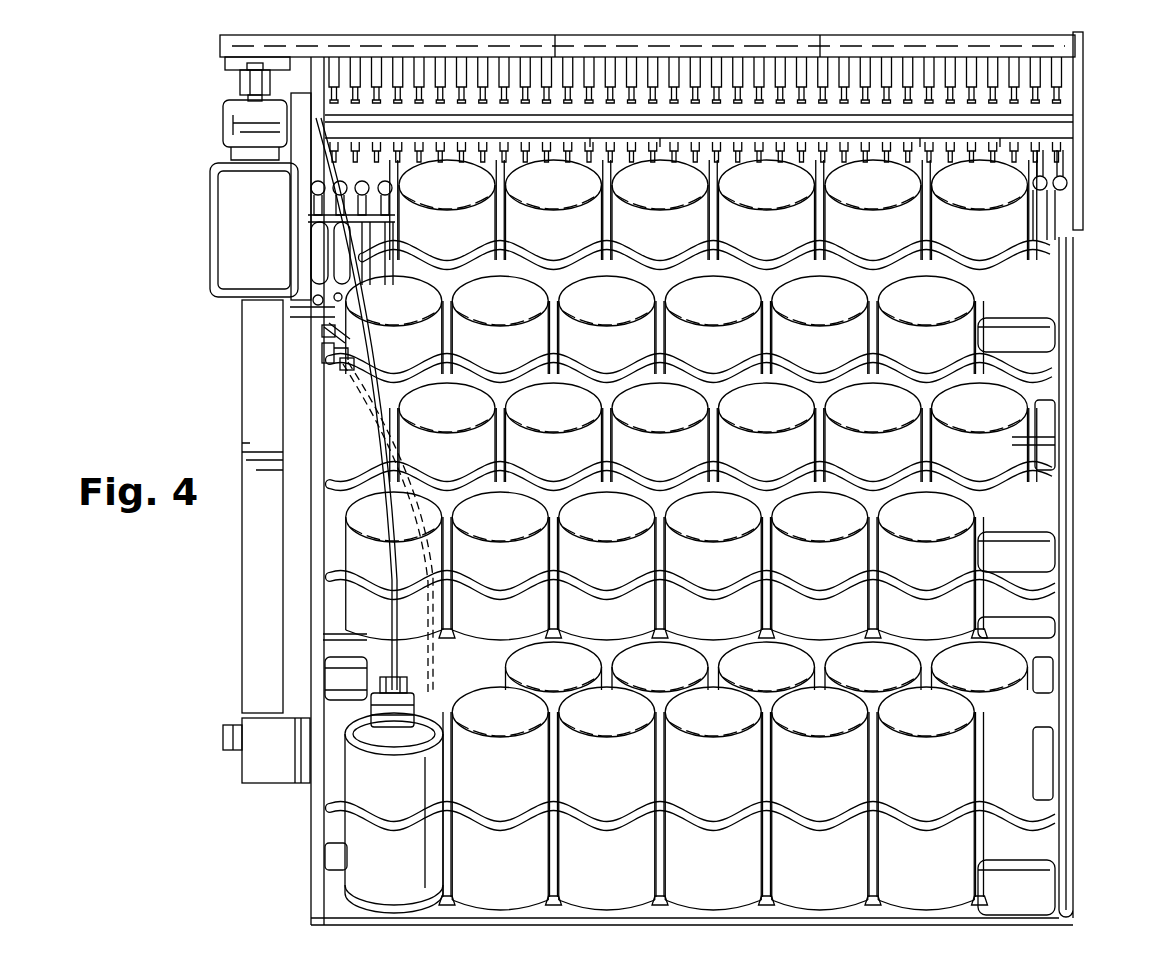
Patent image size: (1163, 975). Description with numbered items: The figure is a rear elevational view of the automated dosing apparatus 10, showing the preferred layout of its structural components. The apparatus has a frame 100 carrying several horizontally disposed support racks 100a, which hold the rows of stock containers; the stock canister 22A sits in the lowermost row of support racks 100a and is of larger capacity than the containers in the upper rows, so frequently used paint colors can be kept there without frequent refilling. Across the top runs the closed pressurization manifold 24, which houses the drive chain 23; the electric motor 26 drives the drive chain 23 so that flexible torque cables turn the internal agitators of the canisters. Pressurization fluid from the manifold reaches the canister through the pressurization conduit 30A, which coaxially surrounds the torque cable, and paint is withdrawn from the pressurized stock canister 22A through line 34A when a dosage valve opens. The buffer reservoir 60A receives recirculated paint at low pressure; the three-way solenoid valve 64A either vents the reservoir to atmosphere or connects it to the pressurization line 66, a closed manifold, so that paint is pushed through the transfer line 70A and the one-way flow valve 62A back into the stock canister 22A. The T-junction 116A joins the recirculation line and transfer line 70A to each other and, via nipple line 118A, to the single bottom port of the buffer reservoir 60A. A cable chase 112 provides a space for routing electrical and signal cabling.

The automated dosing apparatus 10 is at (185, 790).
The stock canister 22A is at (416, 791).
The drive chain 23 is at (1058, 46).
The pressurization manifold 24 is at (225, 48).
The electric motor 26 is at (252, 225).
The pressurization conduit 30A is at (345, 637).
The line 34A is at (357, 668).
The buffer reservoir 60A is at (317, 254).
The one-way flow valve 62A is at (430, 700).
The three-way solenoid valve 64A is at (315, 188).
The pressurization line 66 is at (1072, 128).
The transfer line 70A is at (312, 347).
The frame 100 is at (1073, 582).
The support racks 100a is at (1043, 357).
The cable chase 112 is at (279, 563).
The T-junction 116A is at (312, 333).
The nipple line 118A is at (312, 306).